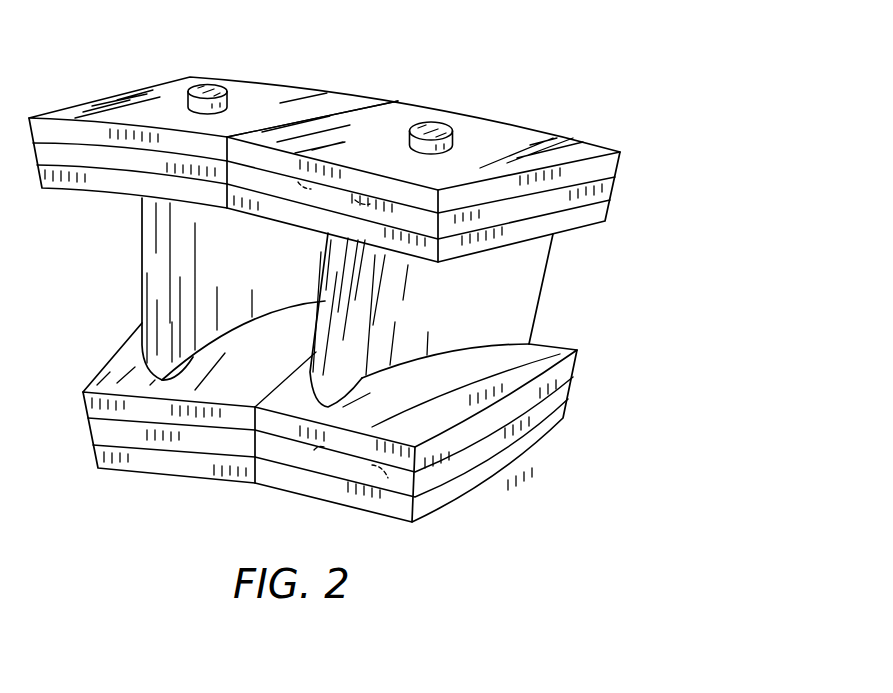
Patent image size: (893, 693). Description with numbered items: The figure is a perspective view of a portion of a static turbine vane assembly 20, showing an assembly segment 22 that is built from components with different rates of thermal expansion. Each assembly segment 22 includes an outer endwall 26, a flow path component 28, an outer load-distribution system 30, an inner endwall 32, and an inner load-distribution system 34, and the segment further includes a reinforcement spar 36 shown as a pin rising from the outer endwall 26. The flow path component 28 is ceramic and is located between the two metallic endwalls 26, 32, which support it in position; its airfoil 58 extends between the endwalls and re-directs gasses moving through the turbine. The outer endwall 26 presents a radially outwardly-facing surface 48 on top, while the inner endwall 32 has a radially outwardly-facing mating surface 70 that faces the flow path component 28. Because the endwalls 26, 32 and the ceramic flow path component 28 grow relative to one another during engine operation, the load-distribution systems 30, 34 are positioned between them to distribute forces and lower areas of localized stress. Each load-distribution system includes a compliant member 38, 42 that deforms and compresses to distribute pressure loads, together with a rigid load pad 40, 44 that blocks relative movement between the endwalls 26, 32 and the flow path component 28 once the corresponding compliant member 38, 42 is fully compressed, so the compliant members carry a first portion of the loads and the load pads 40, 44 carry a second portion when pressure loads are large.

The vane assembly 20 is at (615, 69).
The assembly segment 22 is at (143, 67).
The outer endwall 26 is at (483, 130).
The flow path component 28 is at (523, 285).
The outer load-distribution system 30 is at (552, 202).
The inner endwall 32 is at (526, 461).
The inner load-distribution system 34 is at (570, 390).
The reinforcement spar 36 is at (433, 117).
The compliant member 38 is at (329, 196).
The rigid load pad 40 is at (297, 178).
The compliant member 42 is at (449, 463).
The rigid load pad 44 is at (312, 452).
The radially outwardly-facing surface 48 is at (526, 137).
The airfoil 58 is at (446, 327).
The radially outwardly-facing mating surface 70 is at (367, 413).